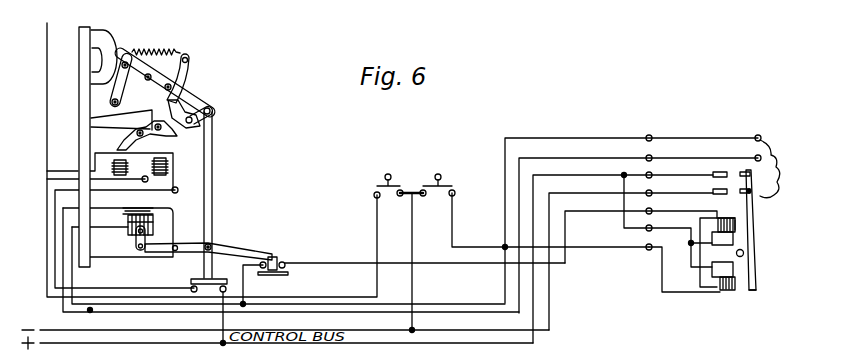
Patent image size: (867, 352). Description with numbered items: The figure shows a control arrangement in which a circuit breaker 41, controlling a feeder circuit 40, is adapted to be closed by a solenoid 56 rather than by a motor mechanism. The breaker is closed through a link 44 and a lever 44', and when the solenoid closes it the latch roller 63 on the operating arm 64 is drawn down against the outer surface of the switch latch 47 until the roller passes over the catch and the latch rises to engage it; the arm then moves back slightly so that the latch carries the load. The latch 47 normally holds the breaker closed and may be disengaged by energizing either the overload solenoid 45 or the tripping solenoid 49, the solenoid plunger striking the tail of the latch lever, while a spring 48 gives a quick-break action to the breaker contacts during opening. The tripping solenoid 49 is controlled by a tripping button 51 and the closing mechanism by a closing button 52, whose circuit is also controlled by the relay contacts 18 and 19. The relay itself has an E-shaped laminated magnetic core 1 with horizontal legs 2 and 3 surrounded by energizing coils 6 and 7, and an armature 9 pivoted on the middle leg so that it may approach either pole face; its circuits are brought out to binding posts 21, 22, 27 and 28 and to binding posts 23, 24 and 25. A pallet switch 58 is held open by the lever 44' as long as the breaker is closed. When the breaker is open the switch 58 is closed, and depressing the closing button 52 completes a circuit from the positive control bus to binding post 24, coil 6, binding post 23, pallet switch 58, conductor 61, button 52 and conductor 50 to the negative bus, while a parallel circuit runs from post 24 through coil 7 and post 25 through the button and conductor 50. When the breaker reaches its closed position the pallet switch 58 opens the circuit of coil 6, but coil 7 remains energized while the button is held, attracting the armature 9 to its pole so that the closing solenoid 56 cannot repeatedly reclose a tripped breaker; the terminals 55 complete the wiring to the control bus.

The laminated magnetic core 1 is at (717, 252).
The horizontal leg 2 is at (740, 223).
The horizontal leg 3 is at (741, 285).
The energizing coil 6 is at (726, 217).
The energizing coil 7 is at (727, 290).
The armature 9 is at (747, 252).
The relay contact 18 is at (772, 185).
The relay contact 19 is at (713, 190).
The binding post 21 is at (632, 214).
The binding post 22 is at (640, 229).
The binding post 23 is at (641, 230).
The binding post 24 is at (668, 221).
The binding post 25 is at (672, 263).
The binding post 27 is at (623, 252).
The binding post 28 is at (631, 255).
The feeder circuit 40 is at (45, 42).
The circuit breaker 41 is at (107, 43).
The link 44 is at (222, 195).
The lever 44' is at (208, 246).
The overload solenoid 45 is at (112, 167).
The switch latch 47 is at (173, 133).
The spring 48 is at (163, 47).
The tripping solenoid 49 is at (160, 184).
The conductor 50 is at (414, 258).
The tripping button 51 is at (388, 199).
The closing button 52 is at (437, 199).
The contacts 55 is at (209, 312).
The solenoid 56 is at (157, 222).
The pallet switch 58 is at (411, 274).
The conductor 61 is at (478, 304).
The latch roller 63 is at (192, 115).
The operating arm 64 is at (215, 108).